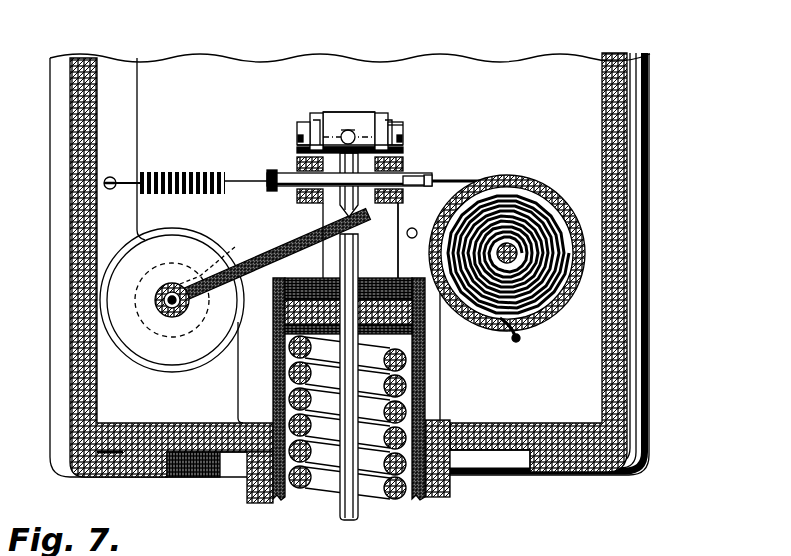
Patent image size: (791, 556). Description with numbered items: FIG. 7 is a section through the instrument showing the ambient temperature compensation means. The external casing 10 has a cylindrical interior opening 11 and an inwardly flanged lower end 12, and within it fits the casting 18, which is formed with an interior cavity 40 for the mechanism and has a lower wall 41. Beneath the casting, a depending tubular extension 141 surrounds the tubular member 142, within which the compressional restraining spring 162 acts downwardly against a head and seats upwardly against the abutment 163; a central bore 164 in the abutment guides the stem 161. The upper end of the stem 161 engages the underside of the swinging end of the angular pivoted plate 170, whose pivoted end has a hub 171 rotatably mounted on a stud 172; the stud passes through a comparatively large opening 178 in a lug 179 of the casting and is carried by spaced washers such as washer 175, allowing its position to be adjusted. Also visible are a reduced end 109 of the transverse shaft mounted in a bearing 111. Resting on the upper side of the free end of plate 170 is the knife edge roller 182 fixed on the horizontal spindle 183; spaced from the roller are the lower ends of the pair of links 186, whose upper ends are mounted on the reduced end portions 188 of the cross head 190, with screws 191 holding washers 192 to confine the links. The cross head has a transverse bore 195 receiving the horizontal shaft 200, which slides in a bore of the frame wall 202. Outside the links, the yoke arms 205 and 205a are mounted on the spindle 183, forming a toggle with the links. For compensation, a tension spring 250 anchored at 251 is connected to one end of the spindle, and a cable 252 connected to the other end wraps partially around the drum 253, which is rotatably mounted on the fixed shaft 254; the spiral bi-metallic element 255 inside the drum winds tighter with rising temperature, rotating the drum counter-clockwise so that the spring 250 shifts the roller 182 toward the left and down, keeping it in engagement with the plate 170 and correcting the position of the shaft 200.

The external casing 10 is at (649, 239).
The cylindrical interior opening 11 is at (600, 280).
The casing flange 12 is at (99, 476).
The casting 18 is at (124, 383).
The interior cavity 40 is at (583, 100).
The lower wall 41 is at (483, 455).
The reduced end of shaft 109 is at (407, 236).
The bearing 111 is at (402, 223).
The depending tubular extension 141 is at (247, 488).
The tubular member 142 is at (428, 467).
The stem 161 is at (350, 522).
The compressional restraining spring 162 is at (398, 492).
The abutment 163 is at (405, 313).
The central bore 164 is at (410, 331).
The angular pivoted plate 170 is at (298, 246).
The hub 171 is at (196, 260).
The stud 172 is at (168, 283).
The washer 175 is at (168, 360).
The opening 178 is at (226, 258).
The lug 179 is at (220, 362).
The knife edge roller 182 is at (390, 125).
The spindle 183 is at (408, 179).
The links 186 is at (313, 114).
The reduced end portions of cross head 188 is at (318, 123).
The cross head 190 is at (330, 120).
The screws 191 is at (300, 148).
The washers 192 is at (300, 130).
The transverse bore 195 is at (356, 128).
The horizontal shaft 200 is at (350, 130).
The frame wall 202 is at (340, 112).
The yoke arm 205 is at (300, 176).
The yoke arm 205a is at (428, 172).
The tension spring 250 is at (182, 168).
The anchor 251 is at (111, 177).
The cable 252 is at (455, 180).
The drum 253 is at (515, 180).
The fixed shaft 254 is at (545, 215).
The spiral bi-metallic element 255 is at (544, 293).